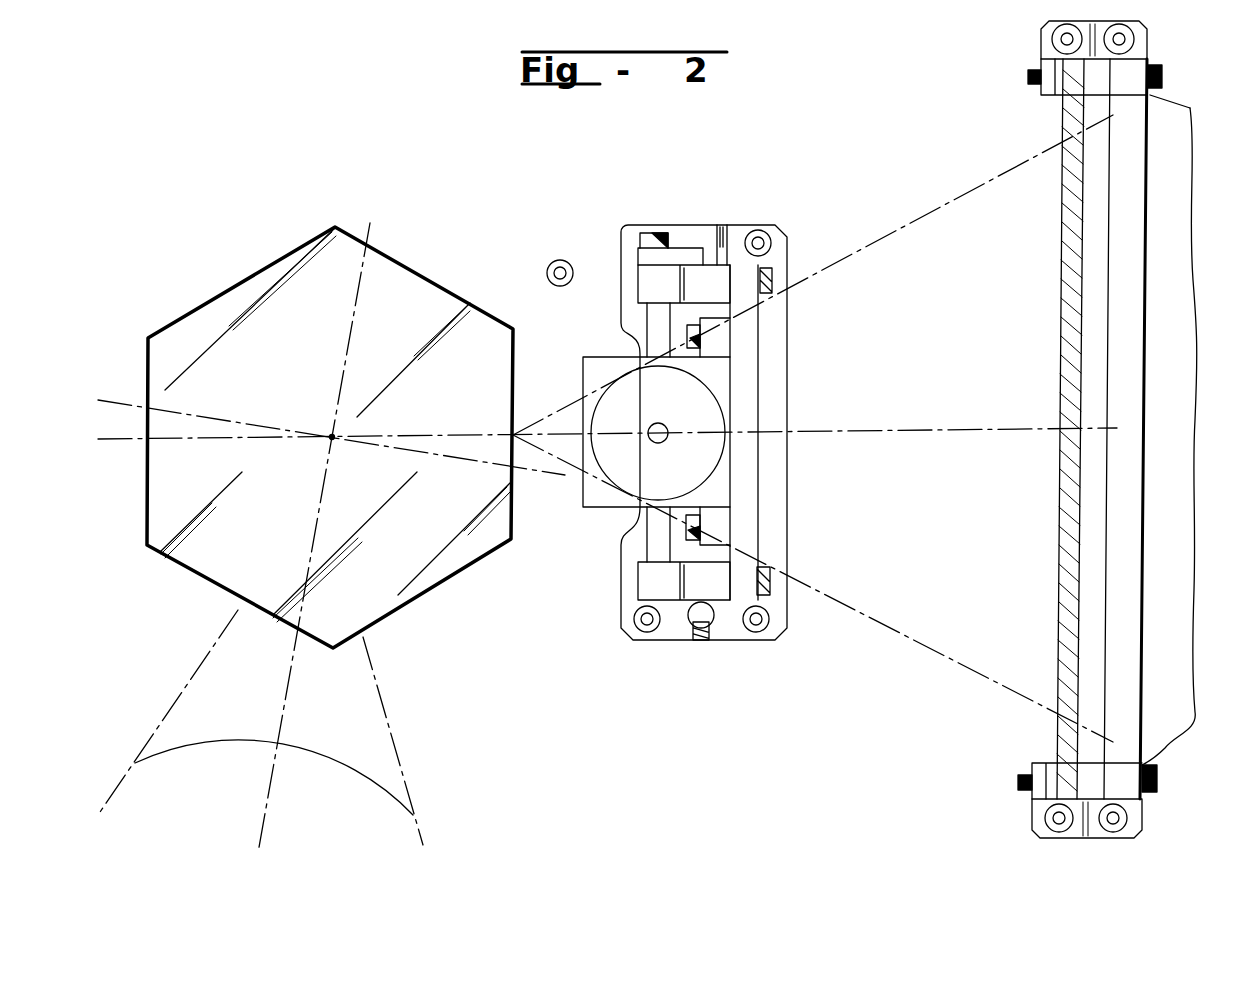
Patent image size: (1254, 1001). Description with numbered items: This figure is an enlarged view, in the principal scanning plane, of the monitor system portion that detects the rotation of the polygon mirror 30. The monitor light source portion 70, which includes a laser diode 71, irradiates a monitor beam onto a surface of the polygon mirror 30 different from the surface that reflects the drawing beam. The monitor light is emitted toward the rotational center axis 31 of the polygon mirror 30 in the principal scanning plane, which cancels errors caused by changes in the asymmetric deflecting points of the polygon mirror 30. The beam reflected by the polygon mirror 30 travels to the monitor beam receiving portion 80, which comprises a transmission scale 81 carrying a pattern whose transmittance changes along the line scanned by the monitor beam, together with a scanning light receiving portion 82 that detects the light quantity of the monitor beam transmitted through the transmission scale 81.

The polygon mirror 30 is at (222, 572).
The rotational center axis 31 is at (333, 440).
The monitor light source portion 70 is at (700, 225).
The laser diode 71 is at (652, 443).
The monitor beam receiving portion 80 is at (1190, 108).
The transmission scale 81 is at (1060, 550).
The scanning light receiving portion 82 is at (1130, 735).